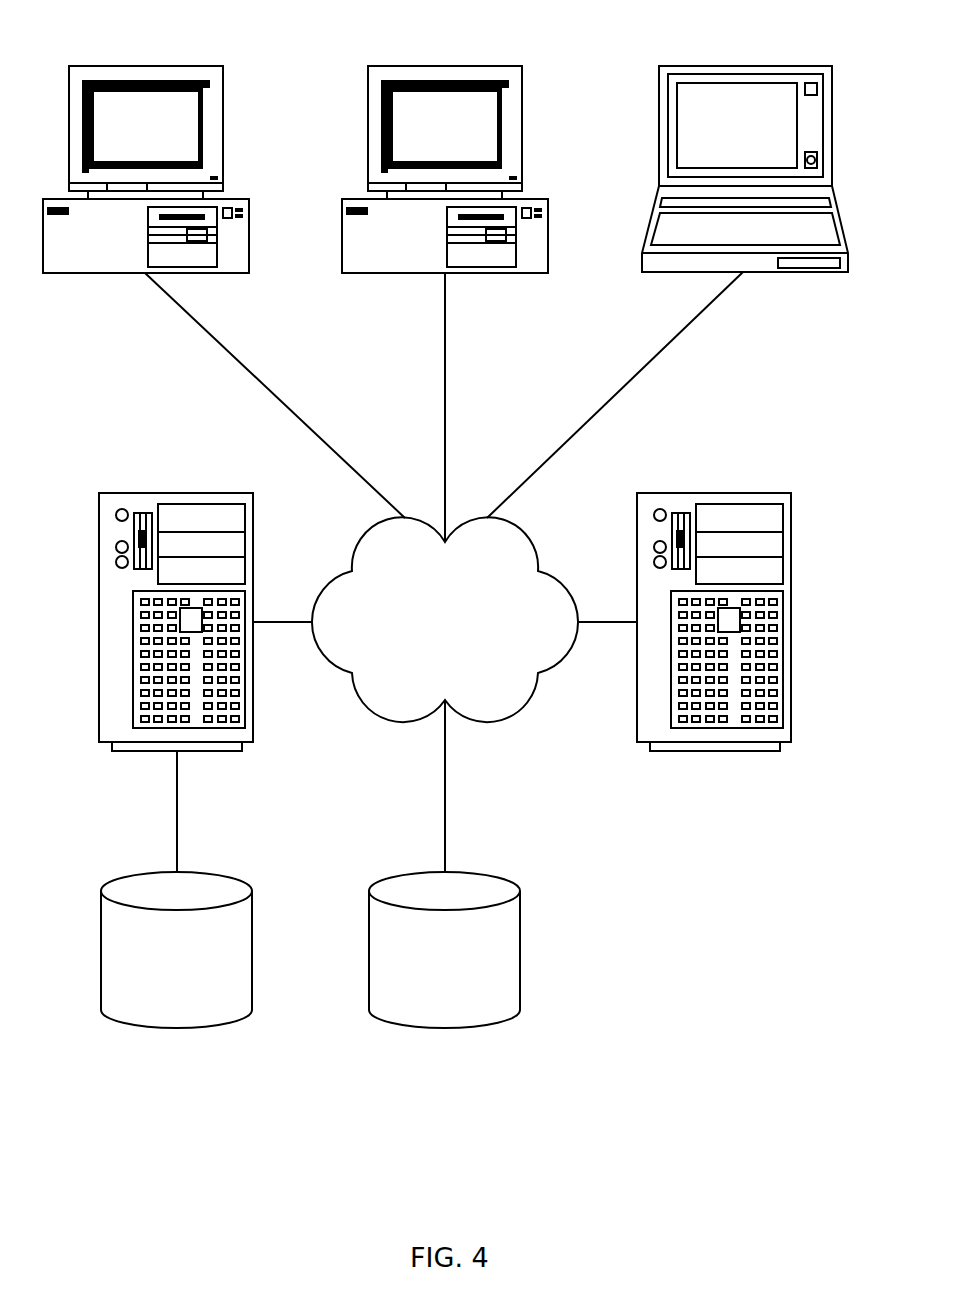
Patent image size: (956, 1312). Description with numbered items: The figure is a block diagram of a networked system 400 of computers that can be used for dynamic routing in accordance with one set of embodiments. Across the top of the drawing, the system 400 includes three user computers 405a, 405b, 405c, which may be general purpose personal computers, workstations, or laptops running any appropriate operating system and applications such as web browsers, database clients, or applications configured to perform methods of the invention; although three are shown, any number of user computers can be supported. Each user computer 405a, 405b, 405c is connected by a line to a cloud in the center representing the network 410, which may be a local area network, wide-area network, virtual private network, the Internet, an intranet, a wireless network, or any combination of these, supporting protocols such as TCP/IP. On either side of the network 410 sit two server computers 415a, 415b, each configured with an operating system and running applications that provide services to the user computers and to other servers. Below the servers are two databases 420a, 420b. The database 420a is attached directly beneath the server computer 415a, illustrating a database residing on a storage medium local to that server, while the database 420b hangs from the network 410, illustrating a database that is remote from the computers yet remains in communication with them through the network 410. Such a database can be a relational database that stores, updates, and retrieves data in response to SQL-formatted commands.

The system 400 is at (703, 1083).
The user computer 405a is at (249, 220).
The user computer 405b is at (342, 220).
The user computer 405c is at (659, 168).
The network 410 is at (482, 725).
The server computer 415a is at (98, 622).
The server computer 415b is at (791, 622).
The database 420a is at (177, 1028).
The database 420b is at (445, 1028).